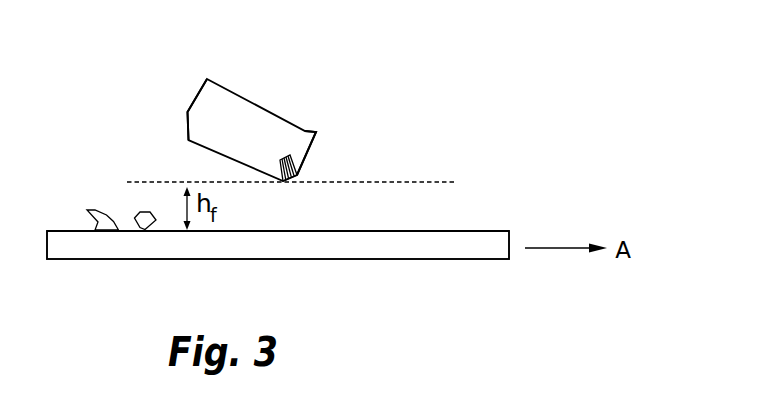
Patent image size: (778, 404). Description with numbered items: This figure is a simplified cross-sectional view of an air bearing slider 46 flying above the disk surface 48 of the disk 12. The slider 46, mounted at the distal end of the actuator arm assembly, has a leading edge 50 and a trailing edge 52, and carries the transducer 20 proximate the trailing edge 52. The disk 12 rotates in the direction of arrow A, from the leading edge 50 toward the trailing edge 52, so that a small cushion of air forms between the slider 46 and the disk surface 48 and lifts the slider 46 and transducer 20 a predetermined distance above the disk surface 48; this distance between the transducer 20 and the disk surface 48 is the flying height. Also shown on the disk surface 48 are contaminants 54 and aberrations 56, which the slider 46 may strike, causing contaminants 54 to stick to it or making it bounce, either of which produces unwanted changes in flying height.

The disk 12 is at (262, 247).
The transducer 20 is at (283, 182).
The air bearing slider 46 is at (252, 120).
The disk surface 48 is at (365, 232).
The leading edge 50 is at (190, 102).
The trailing edge 52 is at (307, 157).
The contaminants 54 is at (148, 210).
The aberrations 56 is at (97, 207).